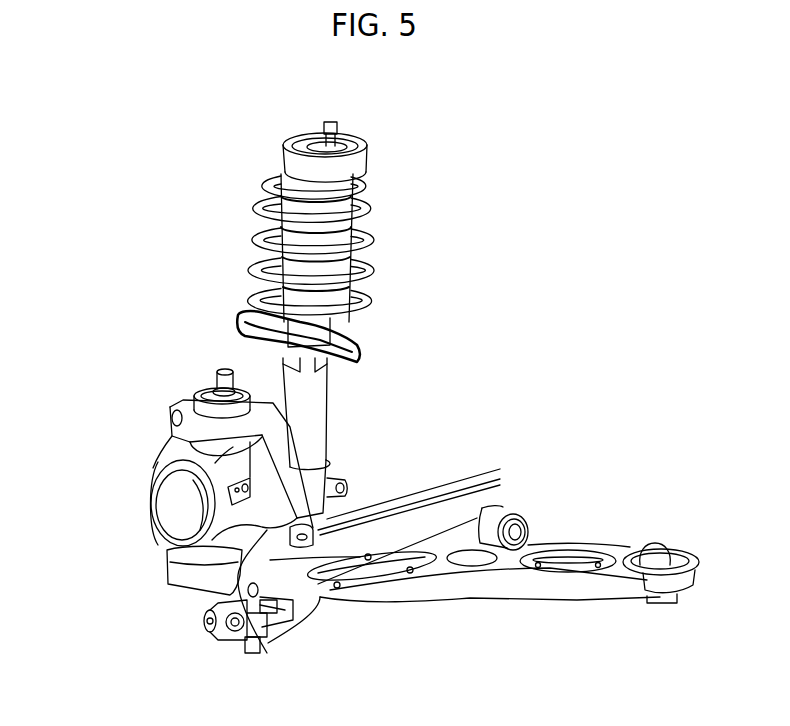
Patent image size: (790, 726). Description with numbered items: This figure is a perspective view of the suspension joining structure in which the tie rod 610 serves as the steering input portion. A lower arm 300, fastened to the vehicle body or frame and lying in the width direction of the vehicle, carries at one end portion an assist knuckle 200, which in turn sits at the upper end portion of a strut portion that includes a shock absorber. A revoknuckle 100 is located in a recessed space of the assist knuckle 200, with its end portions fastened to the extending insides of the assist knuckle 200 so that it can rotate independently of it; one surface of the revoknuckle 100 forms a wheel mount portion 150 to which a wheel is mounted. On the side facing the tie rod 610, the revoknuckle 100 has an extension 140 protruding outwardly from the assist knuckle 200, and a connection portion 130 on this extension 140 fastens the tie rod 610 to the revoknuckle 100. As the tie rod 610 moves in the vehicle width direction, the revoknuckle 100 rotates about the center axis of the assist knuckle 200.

The revoknuckle 100 is at (162, 470).
The wheel mount portion 150 is at (152, 543).
The assist knuckle 200 is at (330, 473).
The tie rod 610 is at (413, 498).
The lower arm 300 is at (489, 580).
The connection portion 130 is at (321, 590).
The extension 140 is at (268, 650).